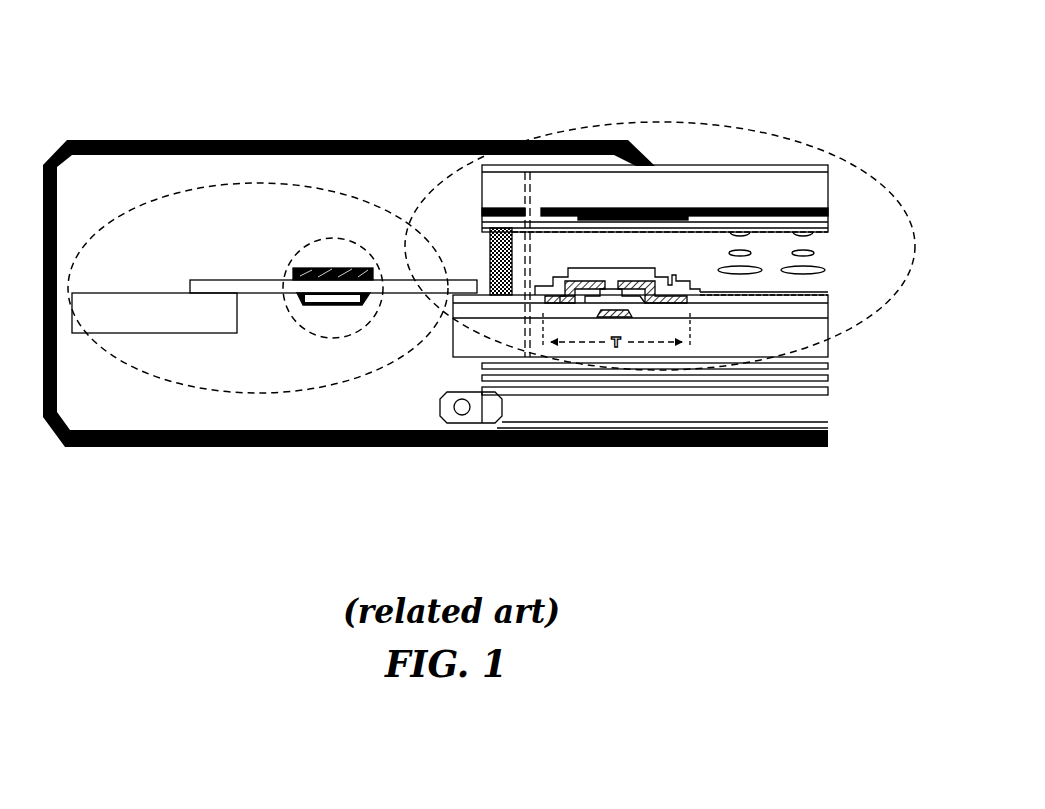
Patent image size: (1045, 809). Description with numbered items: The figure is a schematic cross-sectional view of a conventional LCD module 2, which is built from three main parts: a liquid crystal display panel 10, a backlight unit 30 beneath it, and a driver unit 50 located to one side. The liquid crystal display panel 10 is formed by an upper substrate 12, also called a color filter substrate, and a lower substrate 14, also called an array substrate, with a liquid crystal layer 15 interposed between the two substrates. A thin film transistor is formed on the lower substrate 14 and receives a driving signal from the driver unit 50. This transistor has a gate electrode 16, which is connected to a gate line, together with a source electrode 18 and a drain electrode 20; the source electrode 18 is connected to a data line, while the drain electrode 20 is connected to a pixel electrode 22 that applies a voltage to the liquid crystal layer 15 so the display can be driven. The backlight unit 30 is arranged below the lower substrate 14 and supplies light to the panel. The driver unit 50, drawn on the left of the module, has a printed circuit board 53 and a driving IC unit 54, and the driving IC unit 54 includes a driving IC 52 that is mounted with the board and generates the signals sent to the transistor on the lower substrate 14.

The LCD module 2 is at (858, 75).
The liquid crystal display panel 10 is at (718, 127).
The upper substrate 12 is at (832, 167).
The lower substrate 14 is at (832, 297).
The liquid crystal layer 15 is at (832, 233).
The gate electrode 16 is at (613, 310).
The source electrode 18 is at (586, 283).
The drain electrode 20 is at (641, 283).
The pixel electrode 22 is at (750, 296).
The backlight unit 30 is at (832, 396).
The driver unit 50 is at (252, 183).
The driving IC 52 is at (333, 300).
The printed circuit board 53 is at (165, 320).
The driving IC unit 54 is at (338, 238).